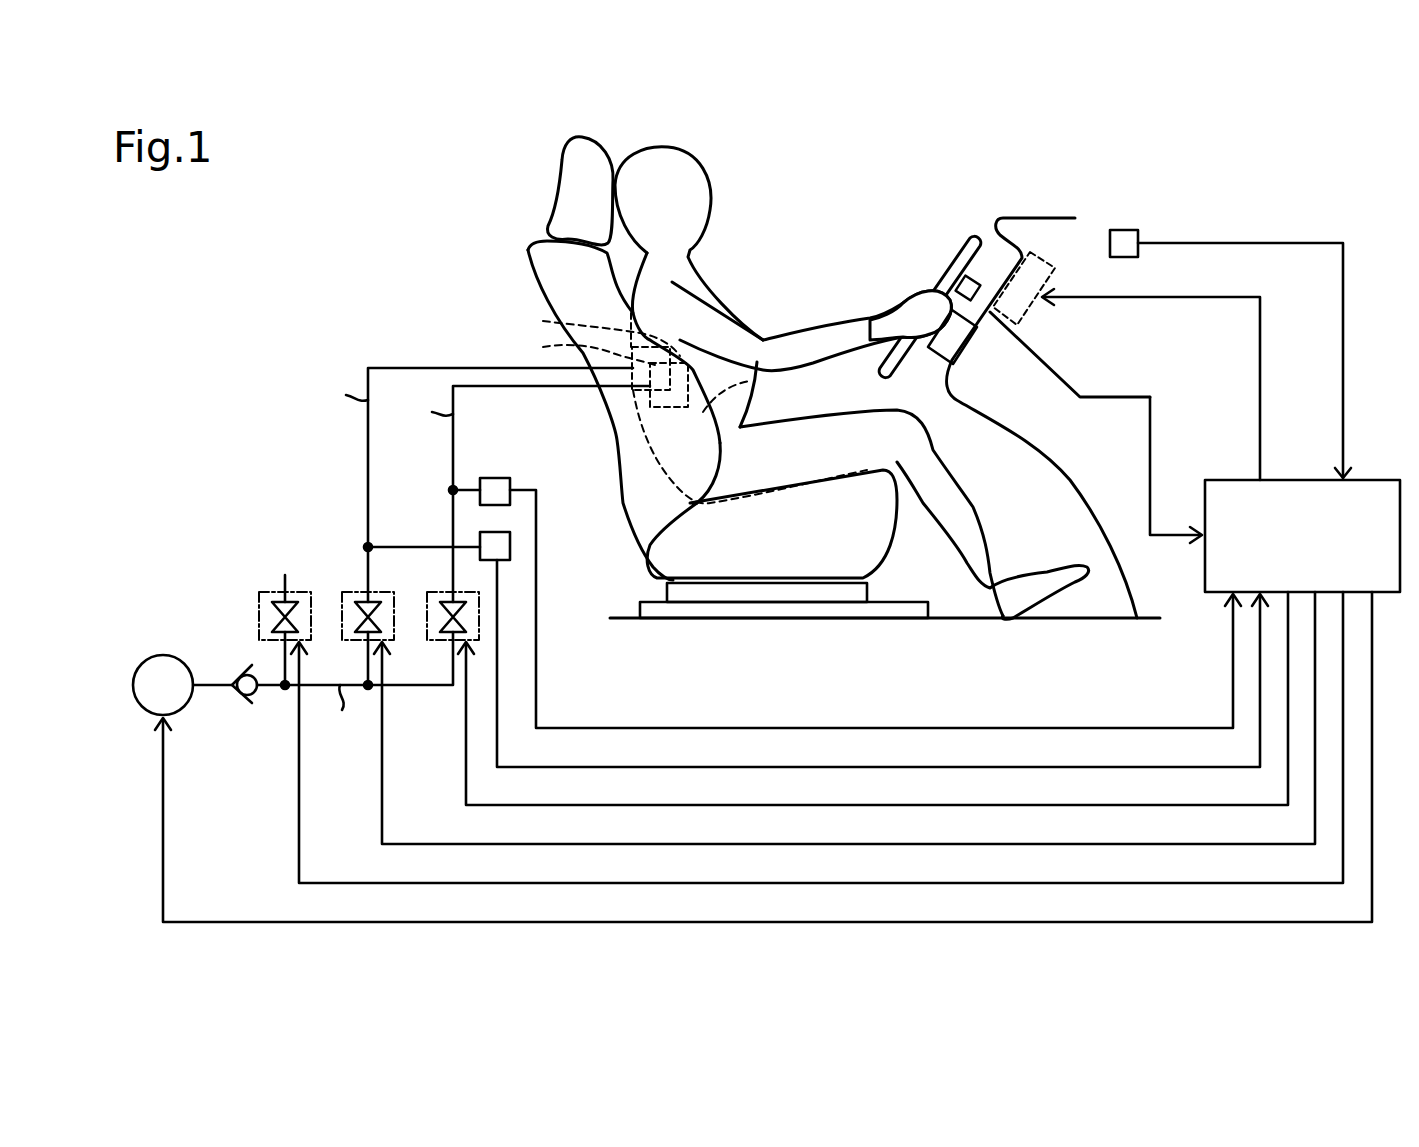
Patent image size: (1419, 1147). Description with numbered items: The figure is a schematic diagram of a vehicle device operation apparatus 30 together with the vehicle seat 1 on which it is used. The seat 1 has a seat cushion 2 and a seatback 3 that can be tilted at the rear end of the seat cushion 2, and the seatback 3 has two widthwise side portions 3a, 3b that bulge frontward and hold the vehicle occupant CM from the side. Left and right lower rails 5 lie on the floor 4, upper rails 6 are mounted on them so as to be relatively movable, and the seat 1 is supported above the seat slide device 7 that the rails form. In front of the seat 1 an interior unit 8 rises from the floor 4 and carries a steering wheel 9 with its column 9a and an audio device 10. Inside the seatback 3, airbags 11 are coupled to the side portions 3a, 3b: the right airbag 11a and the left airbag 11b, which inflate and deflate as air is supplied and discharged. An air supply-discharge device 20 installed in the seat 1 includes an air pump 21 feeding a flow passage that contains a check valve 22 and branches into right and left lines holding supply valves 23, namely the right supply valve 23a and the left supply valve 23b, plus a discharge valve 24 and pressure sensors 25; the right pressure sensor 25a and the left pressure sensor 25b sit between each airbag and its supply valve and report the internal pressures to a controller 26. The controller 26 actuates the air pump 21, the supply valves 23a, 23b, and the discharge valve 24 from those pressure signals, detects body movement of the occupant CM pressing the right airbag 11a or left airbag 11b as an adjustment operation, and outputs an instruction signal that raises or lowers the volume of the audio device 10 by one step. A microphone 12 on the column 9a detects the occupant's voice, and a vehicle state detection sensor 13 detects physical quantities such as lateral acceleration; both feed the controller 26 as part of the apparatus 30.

The vehicle seat 1 is at (556, 187).
The seat cushion 2 is at (884, 553).
The seatback 3 is at (528, 266).
The side portion 3a is at (703, 430).
The side portion 3b is at (750, 381).
The floor 4 is at (630, 608).
The lower rail 5 is at (803, 618).
The upper rail 6 is at (850, 595).
The seat slide device 7 is at (784, 645).
The interior unit 8 is at (1058, 190).
The steering wheel 9 is at (968, 242).
The column 9a is at (938, 355).
The audio device 10 is at (1030, 308).
The airbags 11 is at (659, 405).
The right airbag 11a is at (588, 332).
The left airbag 11b is at (575, 350).
The microphone 12 is at (975, 282).
The vehicle state detection sensor 13 is at (1126, 228).
The air supply-discharge device 20 is at (391, 563).
The air pump 21 is at (164, 655).
The check valve 22 is at (254, 696).
The supply valves 23 is at (368, 591).
The right supply valve 23a is at (453, 600).
The left supply valve 23b is at (368, 600).
The discharge valve 24 is at (266, 607).
The pressure sensors 25 is at (487, 475).
The right pressure sensor 25a is at (492, 478).
The left pressure sensor 25b is at (510, 560).
The controller 26 is at (1365, 480).
The vehicle device operation apparatus 30 is at (787, 541).
The vehicle occupant CM is at (706, 178).